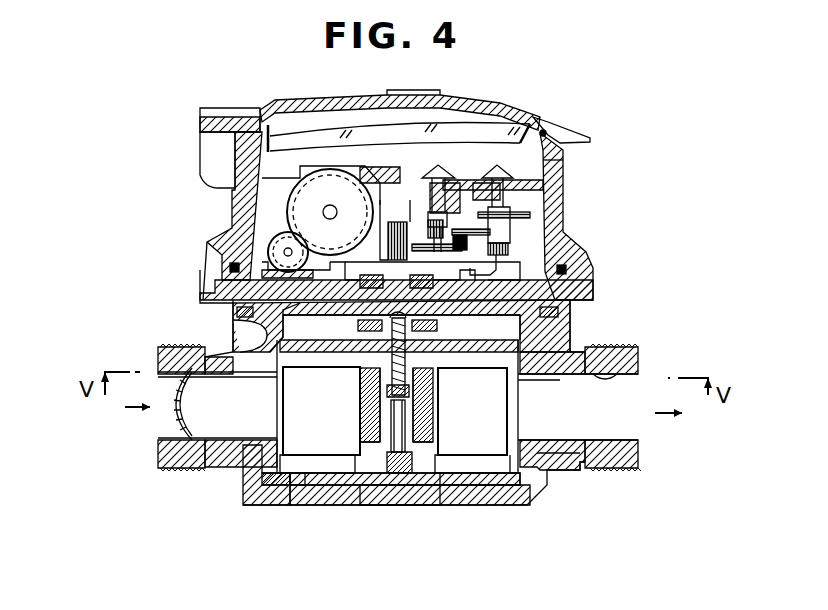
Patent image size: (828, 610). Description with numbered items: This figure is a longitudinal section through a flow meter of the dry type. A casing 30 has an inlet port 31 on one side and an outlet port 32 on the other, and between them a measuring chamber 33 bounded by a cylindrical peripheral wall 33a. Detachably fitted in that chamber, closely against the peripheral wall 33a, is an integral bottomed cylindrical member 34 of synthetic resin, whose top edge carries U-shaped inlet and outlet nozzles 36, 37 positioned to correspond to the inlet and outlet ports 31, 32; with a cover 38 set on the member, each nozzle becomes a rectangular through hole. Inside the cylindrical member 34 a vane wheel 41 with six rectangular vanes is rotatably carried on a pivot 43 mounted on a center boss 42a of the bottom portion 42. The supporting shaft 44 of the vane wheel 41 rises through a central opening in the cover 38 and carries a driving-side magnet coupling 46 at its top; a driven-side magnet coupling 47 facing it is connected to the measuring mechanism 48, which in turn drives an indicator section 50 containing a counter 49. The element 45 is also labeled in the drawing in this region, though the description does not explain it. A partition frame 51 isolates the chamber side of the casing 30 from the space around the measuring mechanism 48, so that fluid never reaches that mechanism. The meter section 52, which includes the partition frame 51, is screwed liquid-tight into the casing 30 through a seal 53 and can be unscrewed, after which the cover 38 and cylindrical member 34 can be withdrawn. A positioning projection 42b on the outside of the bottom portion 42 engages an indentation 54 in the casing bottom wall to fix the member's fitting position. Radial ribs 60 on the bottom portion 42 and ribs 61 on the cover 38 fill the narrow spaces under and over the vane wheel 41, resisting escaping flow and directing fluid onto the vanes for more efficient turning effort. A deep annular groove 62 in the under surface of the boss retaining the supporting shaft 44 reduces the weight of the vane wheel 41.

The casing 30 is at (528, 515).
The inlet port 31 is at (205, 455).
The outlet port 32 is at (638, 358).
The measuring chamber 33 is at (540, 300).
The cylindrical peripheral wall 33a is at (245, 497).
The bottomed cylindrical member 34 is at (550, 470).
The inlet nozzle 36 is at (275, 377).
The outlet nozzle 37 is at (610, 404).
The cover 38 is at (343, 342).
The vane wheel 41 is at (458, 490).
The bottom portion 42 is at (330, 495).
The center boss 42a is at (370, 495).
The positioning projection 42b is at (285, 495).
The pivot 43 is at (420, 485).
The supporting shaft 44 is at (352, 375).
The adjusting screw 45 is at (432, 358).
The driving-side magnet coupling 46 is at (440, 325).
The driven-side magnet coupling 47 is at (500, 270).
The measuring mechanism 48 is at (530, 232).
The counter 49 is at (300, 215).
The indicator section 50 is at (490, 165).
The partition frame 51 is at (238, 333).
The meter section 52 is at (560, 205).
The seal 53 is at (572, 326).
The indentation 54 is at (300, 497).
The ribs 60 is at (490, 485).
The ribs 61 is at (497, 360).
The annular groove 62 is at (440, 445).